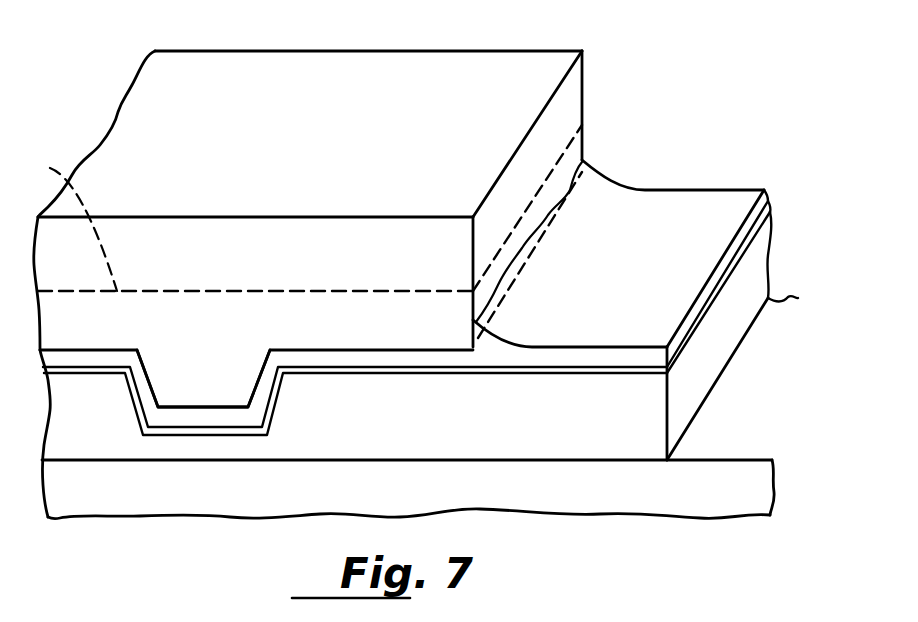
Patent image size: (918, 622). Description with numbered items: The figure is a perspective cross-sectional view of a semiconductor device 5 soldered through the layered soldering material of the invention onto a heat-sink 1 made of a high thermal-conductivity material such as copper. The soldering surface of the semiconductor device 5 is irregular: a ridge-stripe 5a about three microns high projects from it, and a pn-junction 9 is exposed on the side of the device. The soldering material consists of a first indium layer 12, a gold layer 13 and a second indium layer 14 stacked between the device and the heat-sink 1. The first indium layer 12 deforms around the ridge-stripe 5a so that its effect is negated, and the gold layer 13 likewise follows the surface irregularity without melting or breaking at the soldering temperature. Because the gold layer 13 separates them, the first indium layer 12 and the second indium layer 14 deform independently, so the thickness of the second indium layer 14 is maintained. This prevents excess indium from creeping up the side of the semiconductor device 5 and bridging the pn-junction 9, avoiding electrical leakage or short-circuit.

The heat-sink 1 is at (103, 493).
The semiconductor device 5 is at (413, 77).
The ridge-stripe 5a is at (210, 395).
The pn-junction 9 is at (76, 216).
The first indium layer 12 is at (695, 375).
The gold layer 13 is at (703, 305).
The second indium layer 14 is at (653, 203).